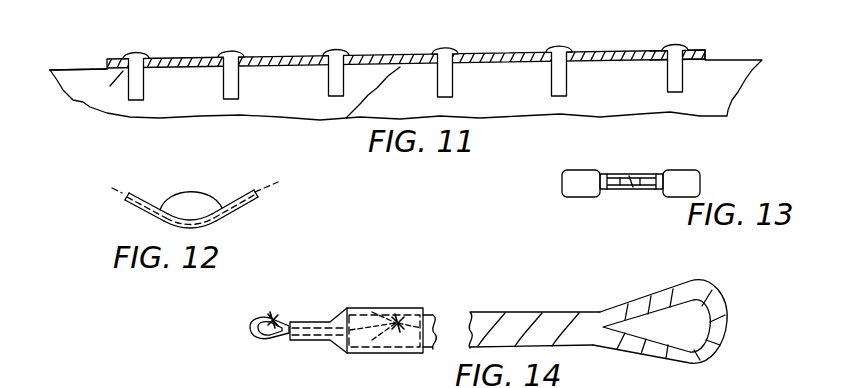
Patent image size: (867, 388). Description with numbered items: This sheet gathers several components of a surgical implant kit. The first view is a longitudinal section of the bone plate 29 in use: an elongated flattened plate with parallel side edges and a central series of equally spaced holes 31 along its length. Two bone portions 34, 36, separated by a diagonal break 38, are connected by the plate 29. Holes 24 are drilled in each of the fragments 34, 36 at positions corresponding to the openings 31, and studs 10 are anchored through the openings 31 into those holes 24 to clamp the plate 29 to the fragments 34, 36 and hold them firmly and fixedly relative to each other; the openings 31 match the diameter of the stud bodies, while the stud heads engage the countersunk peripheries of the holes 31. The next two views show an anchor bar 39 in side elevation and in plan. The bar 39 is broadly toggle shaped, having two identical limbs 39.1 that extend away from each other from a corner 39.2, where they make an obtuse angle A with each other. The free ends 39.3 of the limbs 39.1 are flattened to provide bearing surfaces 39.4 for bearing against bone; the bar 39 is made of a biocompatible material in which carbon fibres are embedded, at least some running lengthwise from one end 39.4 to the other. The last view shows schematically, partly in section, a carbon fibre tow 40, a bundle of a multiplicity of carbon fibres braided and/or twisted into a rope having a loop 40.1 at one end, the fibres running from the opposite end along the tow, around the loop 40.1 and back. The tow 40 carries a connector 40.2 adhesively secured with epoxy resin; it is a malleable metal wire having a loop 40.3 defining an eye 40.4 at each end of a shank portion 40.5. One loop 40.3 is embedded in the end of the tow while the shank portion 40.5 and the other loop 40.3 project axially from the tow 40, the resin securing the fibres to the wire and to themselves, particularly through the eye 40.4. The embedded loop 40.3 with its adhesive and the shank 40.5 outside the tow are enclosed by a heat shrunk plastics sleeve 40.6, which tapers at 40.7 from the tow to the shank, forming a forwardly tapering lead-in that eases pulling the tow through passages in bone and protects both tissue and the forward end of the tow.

In FIG. 11, the stud 10 is at (222, 43).
In FIG. 11, the hole 24 is at (125, 100).
In FIG. 11, the bone plate 29 is at (515, 50).
In FIG. 11, the hole 31 is at (660, 56).
In FIG. 11, the bone portion 34 is at (110, 86).
In FIG. 11, the bone portion 36 is at (720, 88).
In FIG. 11, the diagonal break 38 is at (363, 117).
In FIG. 12, the anchor bar 39 is at (194, 210).
In FIG. 13, the anchor bar 39 is at (639, 185).
In FIG. 12, the limb 39.1 is at (210, 204).
In FIG. 13, the limb 39.1 is at (615, 182).
In FIG. 12, the corner 39.2 is at (231, 231).
In FIG. 13, the corner 39.2 is at (636, 166).
In FIG. 12, the free end 39.3 is at (127, 199).
In FIG. 13, the free end 39.3 is at (692, 182).
In FIG. 12, the bearing surface 39.4 is at (142, 212).
In FIG. 12, the obtuse angle A is at (226, 203).
In FIG. 14, the carbon fibre tow 40 is at (469, 316).
In FIG. 14, the loop 40.1 is at (709, 280).
In FIG. 14, the connector 40.2 is at (254, 357).
In FIG. 14, the loop 40.3 is at (252, 325).
In FIG. 14, the eye 40.4 is at (275, 318).
In FIG. 14, the shank portion 40.5 is at (323, 327).
In FIG. 14, the heat shrunk plastics sleeve 40.6 is at (300, 341).
In FIG. 14, the taper 40.7 is at (336, 357).